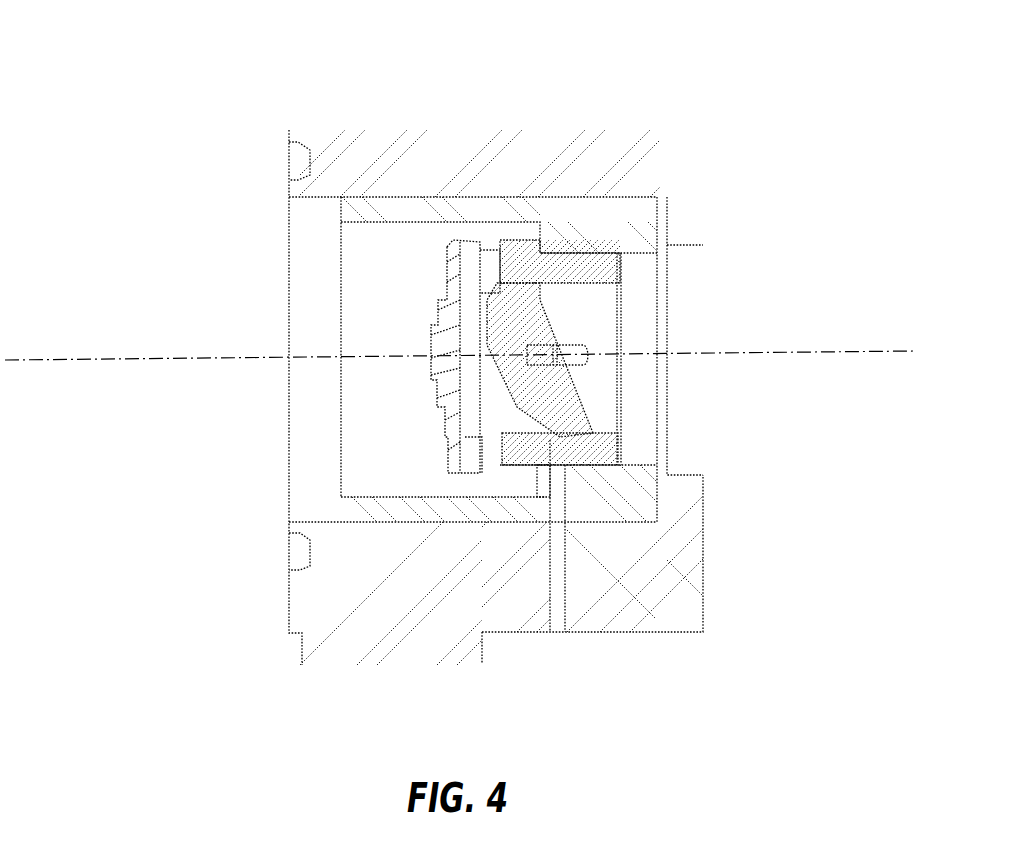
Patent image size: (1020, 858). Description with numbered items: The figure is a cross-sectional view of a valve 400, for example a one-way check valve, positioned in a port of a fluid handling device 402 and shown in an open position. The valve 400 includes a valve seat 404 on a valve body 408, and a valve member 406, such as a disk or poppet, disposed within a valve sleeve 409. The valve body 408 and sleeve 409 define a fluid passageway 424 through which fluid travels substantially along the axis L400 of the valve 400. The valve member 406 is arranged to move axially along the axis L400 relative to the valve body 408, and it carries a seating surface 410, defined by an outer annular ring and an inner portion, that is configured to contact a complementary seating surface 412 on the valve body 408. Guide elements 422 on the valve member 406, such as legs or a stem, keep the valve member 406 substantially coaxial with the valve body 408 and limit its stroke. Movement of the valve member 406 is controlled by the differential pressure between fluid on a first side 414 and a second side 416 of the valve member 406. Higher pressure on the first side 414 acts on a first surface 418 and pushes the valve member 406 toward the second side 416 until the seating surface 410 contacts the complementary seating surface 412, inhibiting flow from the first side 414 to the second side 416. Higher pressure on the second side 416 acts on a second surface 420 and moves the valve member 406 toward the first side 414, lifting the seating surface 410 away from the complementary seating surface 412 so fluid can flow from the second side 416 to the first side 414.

The valve 400 is at (680, 213).
The fluid handling device 402 is at (538, 155).
The valve seat 404 is at (472, 500).
The valve member 406 is at (463, 367).
The valve body 408 is at (552, 440).
The valve sleeve 409 is at (387, 505).
The seating surface 410 is at (487, 256).
The complementary seating surface 412 is at (510, 413).
The first side 414 is at (377, 374).
The second side 416 is at (630, 367).
The first surface 418 is at (447, 288).
The second surface 420 is at (490, 290).
The guide elements 422 is at (527, 312).
The fluid passageway 424 is at (603, 403).
The axis L400 is at (228, 357).